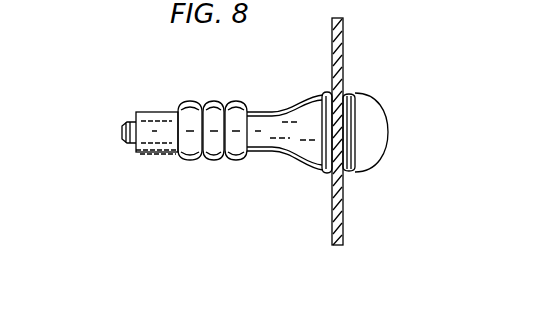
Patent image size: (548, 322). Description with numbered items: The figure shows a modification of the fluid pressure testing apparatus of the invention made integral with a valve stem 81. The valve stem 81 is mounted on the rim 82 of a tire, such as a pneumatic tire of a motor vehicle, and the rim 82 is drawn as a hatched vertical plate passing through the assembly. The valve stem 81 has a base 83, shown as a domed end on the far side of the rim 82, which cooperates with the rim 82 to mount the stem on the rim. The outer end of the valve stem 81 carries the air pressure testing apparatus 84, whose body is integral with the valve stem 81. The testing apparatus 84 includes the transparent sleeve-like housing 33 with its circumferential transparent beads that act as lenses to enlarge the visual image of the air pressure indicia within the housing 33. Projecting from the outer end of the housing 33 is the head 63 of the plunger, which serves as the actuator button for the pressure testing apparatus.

The rim 82 is at (343, 47).
The head 63 is at (122, 128).
The sleeve-like housing 33 is at (205, 163).
The air pressure testing apparatus 84 is at (212, 97).
The valve stem 81 is at (289, 155).
The base 83 is at (373, 129).